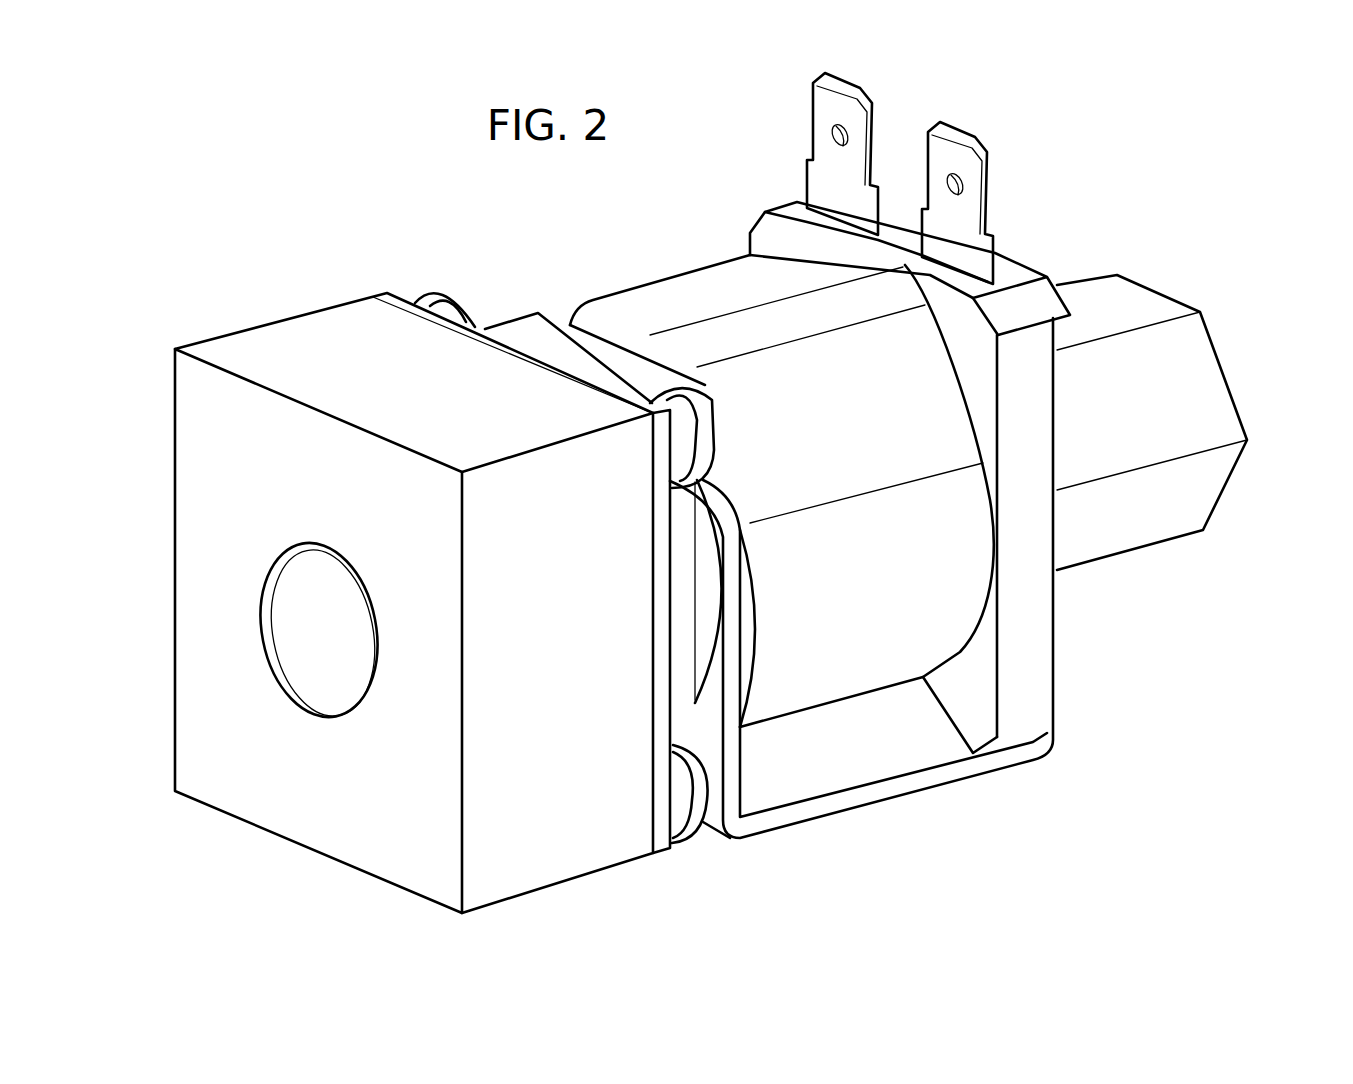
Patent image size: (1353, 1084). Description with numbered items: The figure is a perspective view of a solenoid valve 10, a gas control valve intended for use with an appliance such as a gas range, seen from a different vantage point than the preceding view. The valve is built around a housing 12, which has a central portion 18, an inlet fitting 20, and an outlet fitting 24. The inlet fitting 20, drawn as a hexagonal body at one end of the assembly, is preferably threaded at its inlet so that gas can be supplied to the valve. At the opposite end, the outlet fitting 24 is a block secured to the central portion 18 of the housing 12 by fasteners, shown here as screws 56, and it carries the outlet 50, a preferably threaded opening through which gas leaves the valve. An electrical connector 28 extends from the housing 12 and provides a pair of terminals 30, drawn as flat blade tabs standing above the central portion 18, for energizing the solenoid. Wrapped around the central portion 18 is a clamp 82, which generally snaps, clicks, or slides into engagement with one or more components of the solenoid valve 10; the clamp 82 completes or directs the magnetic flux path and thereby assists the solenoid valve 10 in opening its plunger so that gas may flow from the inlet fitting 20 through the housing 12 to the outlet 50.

The solenoid valve 10 is at (338, 220).
The housing 12 is at (212, 338).
The central portion 18 is at (1043, 705).
The inlet fitting 20 is at (1207, 382).
The outlet fitting 24 is at (583, 858).
The electrical connector 28 is at (1015, 147).
The terminals 30 is at (822, 110).
The outlet 50 is at (332, 655).
The screws 56 is at (460, 305).
The clamp 82 is at (843, 780).